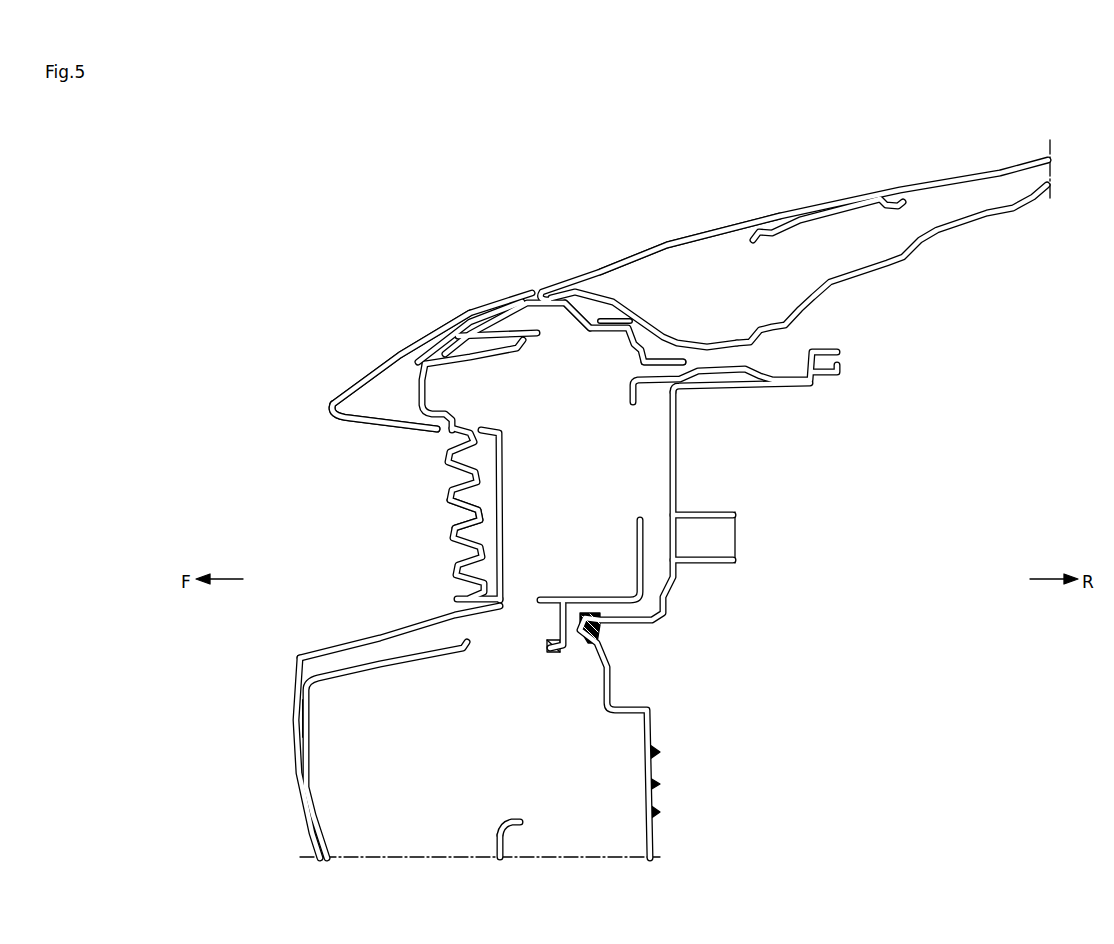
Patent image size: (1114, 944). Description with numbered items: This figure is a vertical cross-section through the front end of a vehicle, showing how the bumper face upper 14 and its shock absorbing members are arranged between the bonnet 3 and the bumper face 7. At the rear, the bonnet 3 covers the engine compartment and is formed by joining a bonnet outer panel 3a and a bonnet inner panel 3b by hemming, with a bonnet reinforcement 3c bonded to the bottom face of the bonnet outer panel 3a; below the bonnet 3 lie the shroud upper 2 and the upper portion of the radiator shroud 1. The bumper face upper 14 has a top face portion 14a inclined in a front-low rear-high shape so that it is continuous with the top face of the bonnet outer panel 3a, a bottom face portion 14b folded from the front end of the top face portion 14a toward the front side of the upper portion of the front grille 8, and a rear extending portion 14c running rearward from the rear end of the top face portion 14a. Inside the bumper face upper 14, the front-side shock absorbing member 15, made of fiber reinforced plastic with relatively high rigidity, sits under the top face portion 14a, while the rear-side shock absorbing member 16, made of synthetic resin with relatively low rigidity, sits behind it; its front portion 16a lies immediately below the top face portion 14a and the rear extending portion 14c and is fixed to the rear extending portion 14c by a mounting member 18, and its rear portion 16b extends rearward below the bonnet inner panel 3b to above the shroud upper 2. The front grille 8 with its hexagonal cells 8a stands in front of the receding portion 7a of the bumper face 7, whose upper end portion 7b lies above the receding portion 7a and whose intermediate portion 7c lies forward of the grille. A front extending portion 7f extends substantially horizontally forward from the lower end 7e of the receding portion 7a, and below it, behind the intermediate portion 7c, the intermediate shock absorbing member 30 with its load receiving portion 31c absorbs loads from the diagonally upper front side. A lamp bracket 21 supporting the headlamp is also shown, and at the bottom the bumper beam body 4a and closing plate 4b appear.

The radiator shroud 1 is at (662, 453).
The shroud upper 2 is at (630, 392).
The bonnet 3 is at (669, 242).
The bonnet outer panel 3a is at (705, 246).
The bonnet inner panel 3b is at (925, 243).
The bonnet reinforcement 3c is at (810, 220).
The bumper beam body 4a is at (508, 818).
The closing plate 4b is at (493, 847).
The bumper face 7 is at (289, 649).
The receding portion 7a is at (503, 497).
The upper end portion 7b is at (460, 364).
The intermediate portion 7c is at (293, 745).
The lower end 7e is at (498, 610).
The front extending portion 7f is at (380, 620).
The front grille 8 is at (446, 484).
The cells 8a is at (460, 527).
The bumper face upper 14 is at (398, 347).
The top face portion 14a is at (352, 388).
The bottom face portion 14b is at (358, 425).
The rear extending portion 14c is at (587, 320).
The front-side shock absorbing member 15 is at (431, 337).
The rear-side shock absorbing member 16 is at (502, 300).
The front portion 16a is at (575, 324).
The rear portion 16b is at (665, 358).
The mounting member 18 is at (604, 332).
The lamp bracket 21 is at (573, 598).
The intermediate shock absorbing member 30 is at (330, 658).
The load receiving portion 31c is at (297, 715).